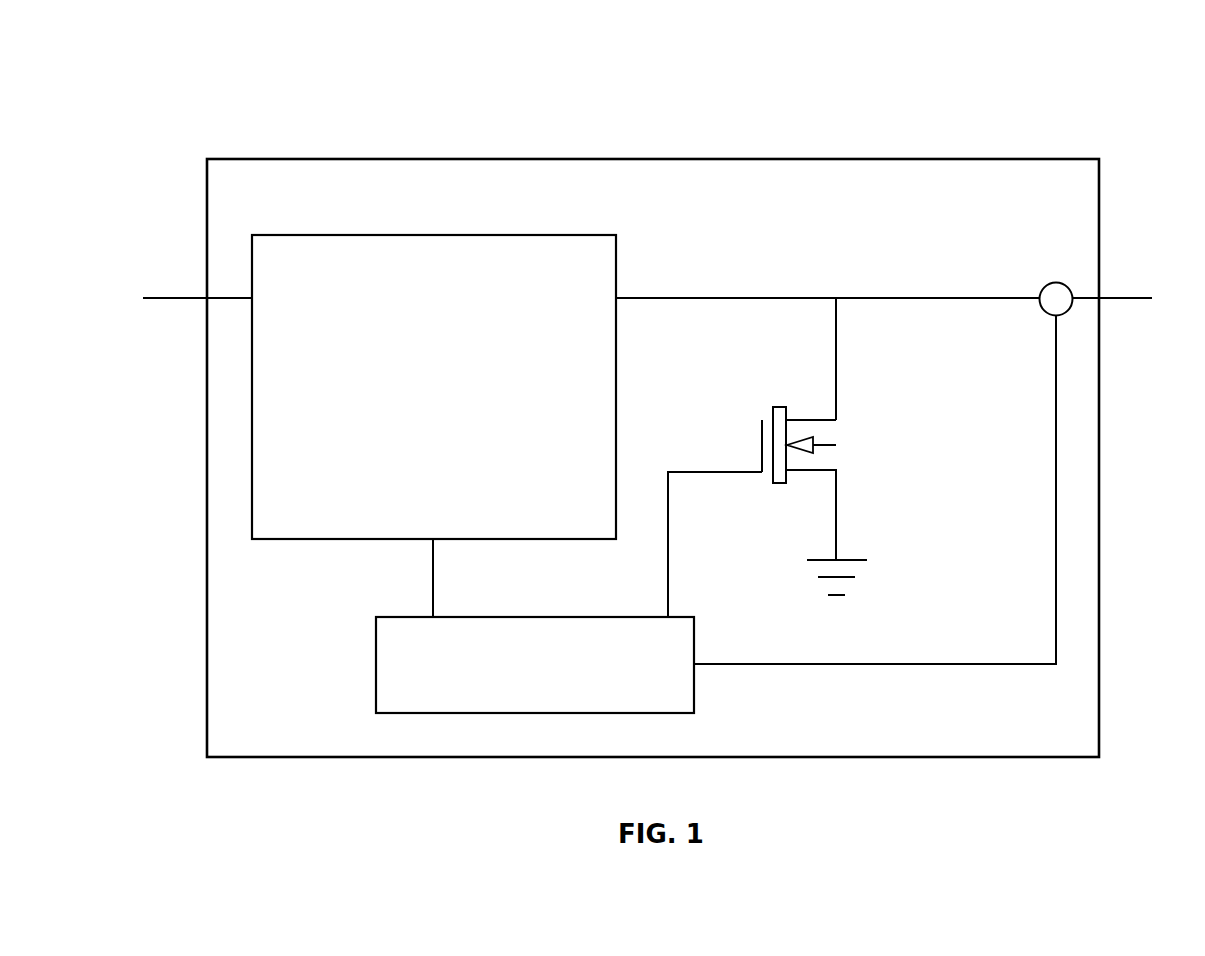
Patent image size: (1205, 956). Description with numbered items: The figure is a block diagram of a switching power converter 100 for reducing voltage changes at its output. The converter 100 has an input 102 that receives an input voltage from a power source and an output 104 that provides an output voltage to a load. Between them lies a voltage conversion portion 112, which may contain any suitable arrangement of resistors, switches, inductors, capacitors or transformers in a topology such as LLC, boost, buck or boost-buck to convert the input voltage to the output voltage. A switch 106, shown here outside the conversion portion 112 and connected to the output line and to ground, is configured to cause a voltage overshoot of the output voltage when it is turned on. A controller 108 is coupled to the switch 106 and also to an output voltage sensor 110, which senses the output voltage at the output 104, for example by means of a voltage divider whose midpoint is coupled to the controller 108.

The switching power converter 100 is at (218, 68).
The input 102 is at (178, 297).
The output 104 is at (1126, 297).
The switch 106 is at (782, 405).
The controller 108 is at (375, 663).
The output voltage sensor 110 is at (1053, 282).
The voltage conversion portion 112 is at (430, 234).